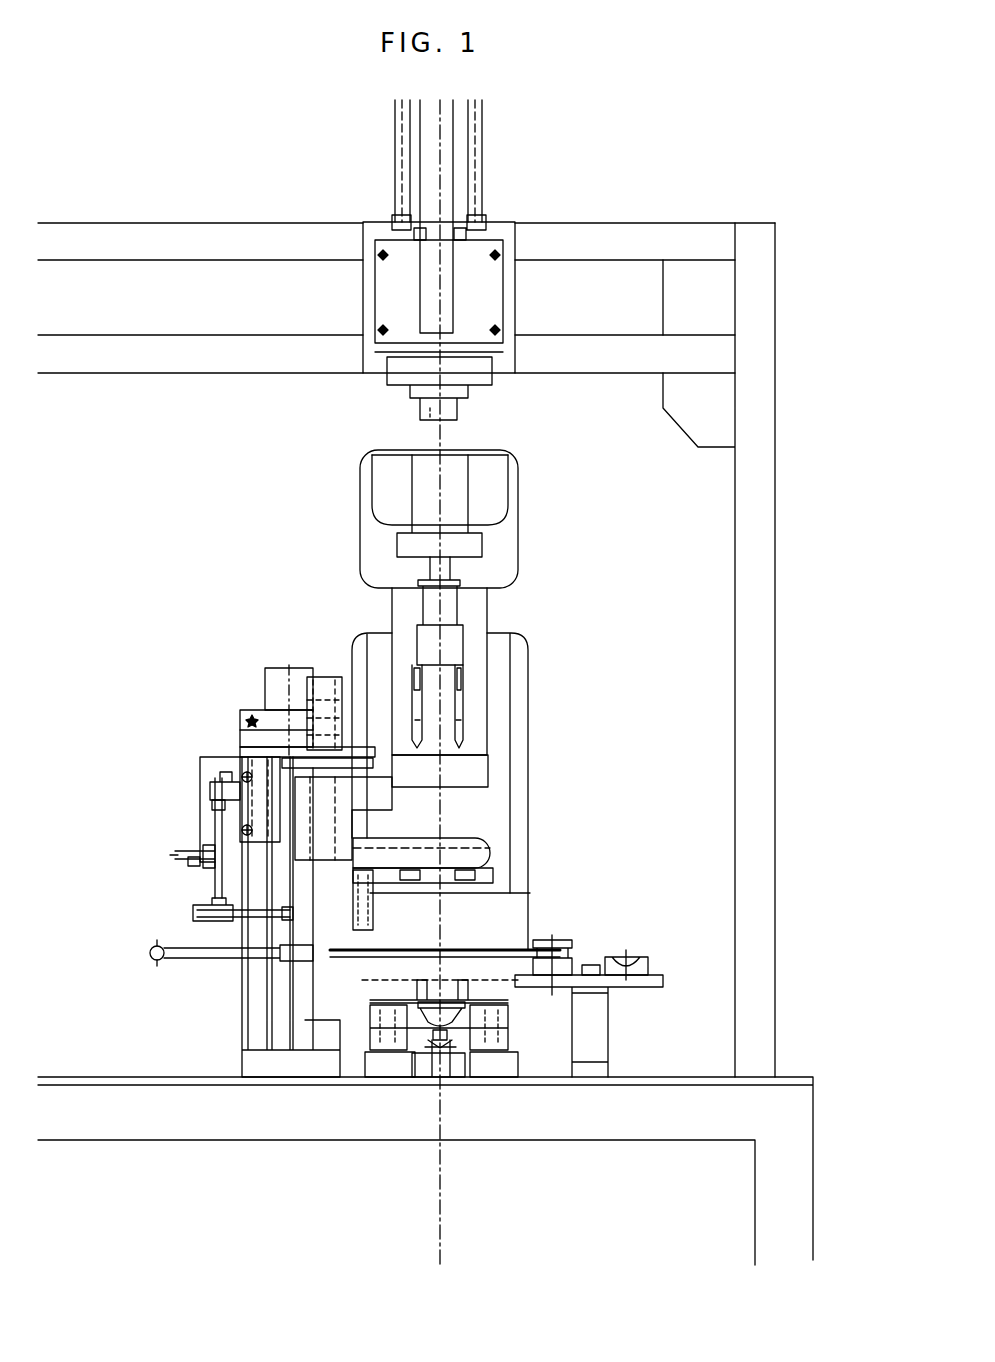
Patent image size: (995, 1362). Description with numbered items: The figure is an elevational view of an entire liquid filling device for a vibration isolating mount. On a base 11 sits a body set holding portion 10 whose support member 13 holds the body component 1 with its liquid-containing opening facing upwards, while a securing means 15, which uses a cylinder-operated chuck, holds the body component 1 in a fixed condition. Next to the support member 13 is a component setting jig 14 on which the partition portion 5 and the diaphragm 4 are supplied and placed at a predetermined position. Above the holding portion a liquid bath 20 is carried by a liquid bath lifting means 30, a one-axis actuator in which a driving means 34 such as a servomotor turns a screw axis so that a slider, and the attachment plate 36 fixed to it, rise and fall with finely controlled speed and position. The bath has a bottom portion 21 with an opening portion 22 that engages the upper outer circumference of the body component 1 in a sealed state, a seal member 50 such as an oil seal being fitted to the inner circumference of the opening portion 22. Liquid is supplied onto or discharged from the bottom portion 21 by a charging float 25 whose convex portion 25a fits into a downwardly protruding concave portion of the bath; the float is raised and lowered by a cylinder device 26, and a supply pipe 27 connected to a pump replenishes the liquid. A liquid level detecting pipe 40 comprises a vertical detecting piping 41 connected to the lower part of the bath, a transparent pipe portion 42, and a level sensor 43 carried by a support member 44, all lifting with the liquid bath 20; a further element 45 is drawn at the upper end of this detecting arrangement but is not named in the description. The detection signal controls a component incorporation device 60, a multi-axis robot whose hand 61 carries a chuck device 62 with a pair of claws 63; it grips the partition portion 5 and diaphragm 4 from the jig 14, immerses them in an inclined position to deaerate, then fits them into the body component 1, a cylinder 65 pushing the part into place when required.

The body component 1 is at (428, 1064).
The diaphragm 4 is at (630, 957).
The partition portion 5 is at (565, 940).
The body set holding portion 10 is at (458, 1067).
The base 11 is at (663, 1130).
The support member 13 is at (417, 1063).
The component setting jig 14 is at (647, 989).
The securing means 15 is at (340, 1058).
The liquid bath 20 is at (497, 854).
The bottom portion 21 is at (386, 875).
The opening portion 22 is at (477, 860).
The charging float 25 is at (360, 790).
The convex portion 25a is at (300, 870).
The cylinder device 26 is at (325, 685).
The supply pipe 27 is at (175, 958).
The liquid bath lifting means 30 is at (236, 716).
The driving means 34 is at (275, 683).
The attachment plate 36 is at (265, 780).
The liquid level detecting pipe 40 is at (212, 830).
The detecting piping 41 is at (208, 893).
The transparent pipe portion 42 is at (217, 847).
The level sensor 43 is at (192, 864).
The support member 44 is at (198, 762).
The valve 45 is at (213, 790).
The seal member 50 is at (469, 886).
The component incorporation device 60 is at (530, 569).
The hand 61 is at (448, 610).
The chuck device 62 is at (470, 727).
The claws 63 is at (461, 713).
The cylinder 65 is at (430, 272).